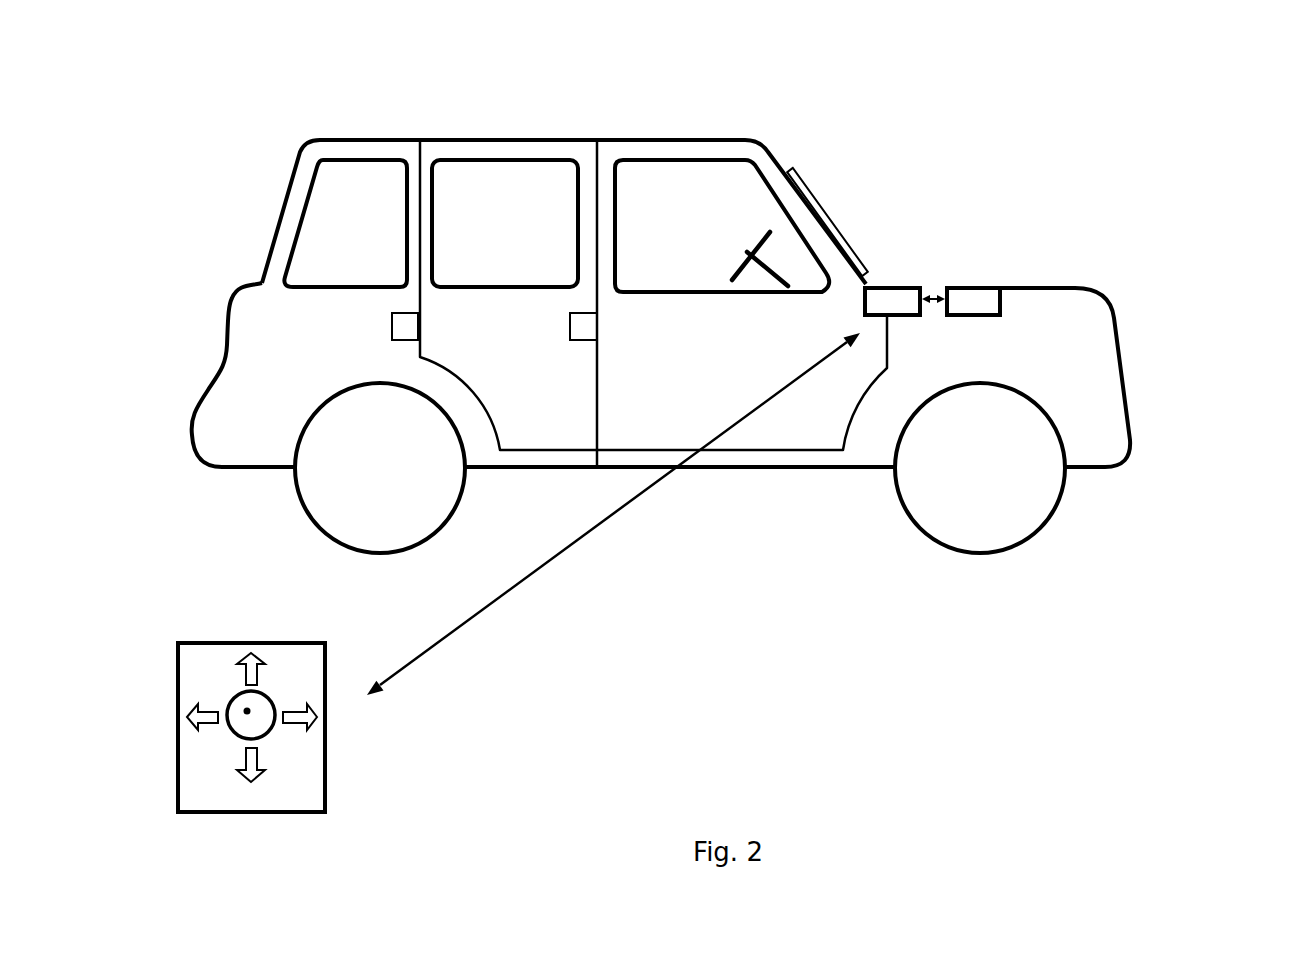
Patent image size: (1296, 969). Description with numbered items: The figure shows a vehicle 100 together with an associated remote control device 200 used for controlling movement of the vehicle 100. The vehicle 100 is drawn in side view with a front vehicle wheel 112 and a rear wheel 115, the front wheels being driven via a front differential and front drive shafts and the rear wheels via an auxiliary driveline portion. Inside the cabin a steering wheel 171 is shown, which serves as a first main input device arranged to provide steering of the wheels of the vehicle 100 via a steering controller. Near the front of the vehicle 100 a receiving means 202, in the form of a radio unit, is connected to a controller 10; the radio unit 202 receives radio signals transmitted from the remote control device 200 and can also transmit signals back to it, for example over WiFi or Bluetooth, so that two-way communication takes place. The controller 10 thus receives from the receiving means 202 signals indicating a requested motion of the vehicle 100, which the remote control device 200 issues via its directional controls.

The vehicle 100 is at (1162, 287).
The front vehicle wheel 112 is at (982, 515).
The rear wheel 115 is at (380, 517).
The steering wheel 171 is at (750, 247).
The receiving means 202 is at (887, 297).
The controller 10 is at (971, 297).
The remote control device 200 is at (172, 608).